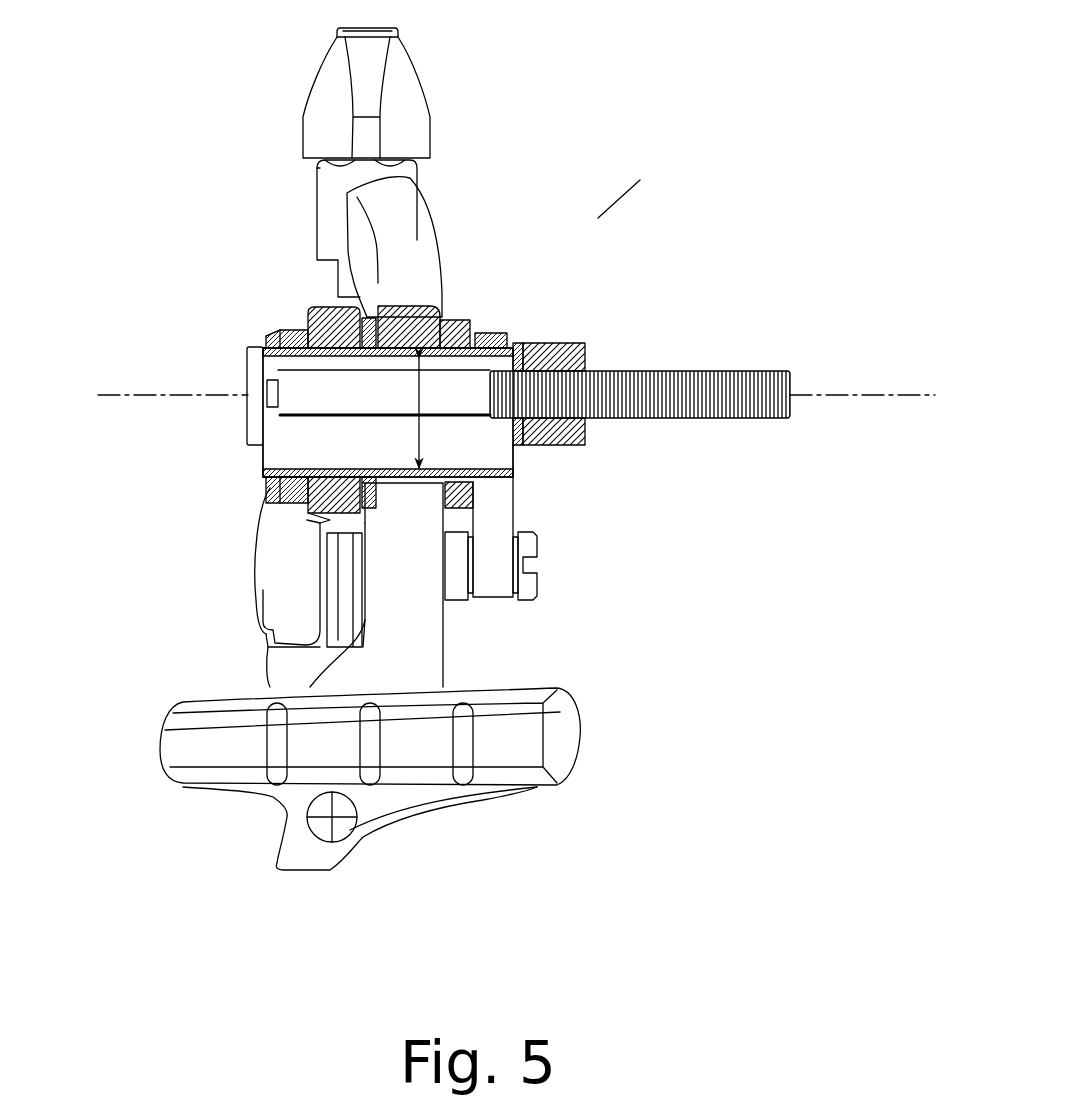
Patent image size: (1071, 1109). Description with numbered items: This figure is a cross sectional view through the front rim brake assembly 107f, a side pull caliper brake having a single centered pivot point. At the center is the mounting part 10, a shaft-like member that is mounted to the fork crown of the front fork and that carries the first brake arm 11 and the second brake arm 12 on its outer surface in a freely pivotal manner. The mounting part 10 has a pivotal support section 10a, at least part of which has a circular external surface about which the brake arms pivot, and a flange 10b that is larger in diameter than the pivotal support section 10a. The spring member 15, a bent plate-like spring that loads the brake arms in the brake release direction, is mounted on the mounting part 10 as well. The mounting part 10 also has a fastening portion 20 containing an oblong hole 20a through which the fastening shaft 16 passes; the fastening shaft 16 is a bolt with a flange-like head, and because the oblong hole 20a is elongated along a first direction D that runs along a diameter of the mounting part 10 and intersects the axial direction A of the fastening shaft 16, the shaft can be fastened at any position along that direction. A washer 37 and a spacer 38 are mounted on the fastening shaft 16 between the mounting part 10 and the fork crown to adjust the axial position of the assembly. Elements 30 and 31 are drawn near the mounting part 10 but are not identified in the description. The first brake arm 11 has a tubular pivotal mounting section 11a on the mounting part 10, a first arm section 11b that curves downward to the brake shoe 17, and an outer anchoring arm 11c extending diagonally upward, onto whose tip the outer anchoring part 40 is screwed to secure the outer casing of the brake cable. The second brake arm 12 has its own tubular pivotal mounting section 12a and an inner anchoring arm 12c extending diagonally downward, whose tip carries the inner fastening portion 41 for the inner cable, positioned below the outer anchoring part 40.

The outer anchoring part 40 is at (412, 95).
The front rim brake assembly 107f is at (689, 179).
The outer anchoring arm 11c is at (420, 238).
The tubular pivotal mounting section 12a is at (330, 307).
The pivotal support section 10a is at (300, 326).
The tubular pivotal mounting section 11a is at (417, 297).
The flange 10b is at (470, 330).
The spring member 15 is at (500, 336).
The fastening shaft 16 is at (650, 372).
The washer 31 is at (270, 332).
The bushing 30 is at (268, 335).
The axial direction A is at (157, 395).
The first direction D is at (417, 400).
The fastening portion 20 is at (253, 453).
The oblong hole 20a is at (270, 465).
The inner fastening portion 41 is at (278, 507).
The inner anchoring arm 12c is at (277, 563).
The second brake arm 12 is at (263, 637).
The washer 37 is at (517, 445).
The spacer 38 is at (585, 445).
The mounting part 10 is at (493, 487).
The first brake arm 11 is at (458, 628).
The first arm section 11b is at (423, 655).
The brake shoe 17 is at (555, 730).